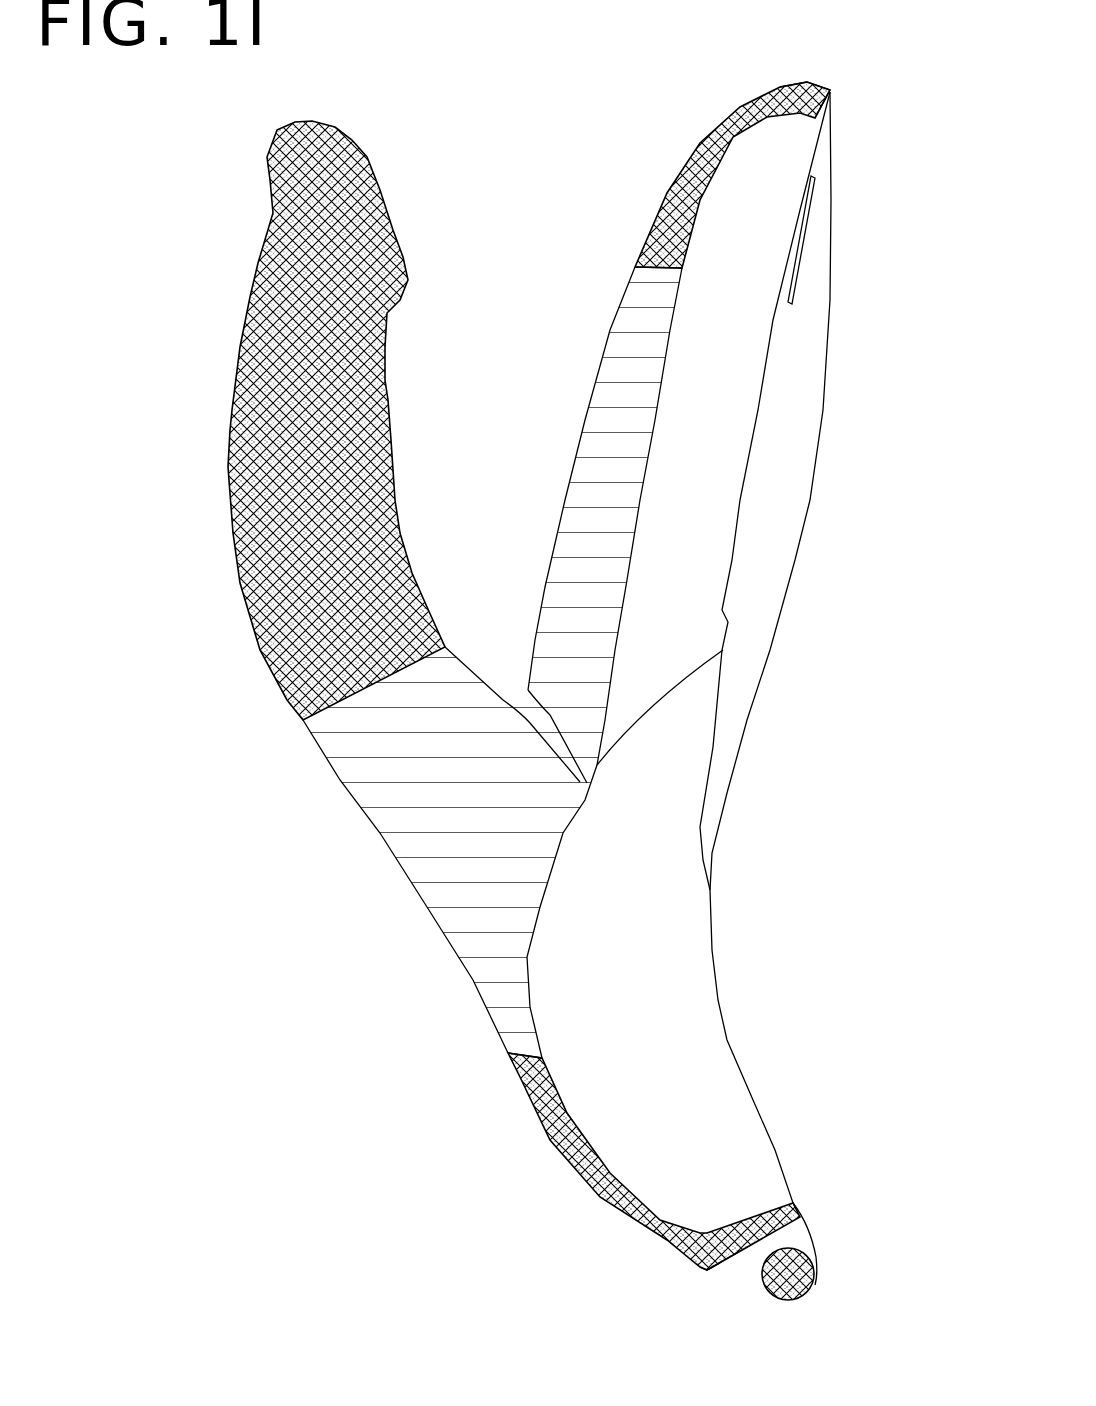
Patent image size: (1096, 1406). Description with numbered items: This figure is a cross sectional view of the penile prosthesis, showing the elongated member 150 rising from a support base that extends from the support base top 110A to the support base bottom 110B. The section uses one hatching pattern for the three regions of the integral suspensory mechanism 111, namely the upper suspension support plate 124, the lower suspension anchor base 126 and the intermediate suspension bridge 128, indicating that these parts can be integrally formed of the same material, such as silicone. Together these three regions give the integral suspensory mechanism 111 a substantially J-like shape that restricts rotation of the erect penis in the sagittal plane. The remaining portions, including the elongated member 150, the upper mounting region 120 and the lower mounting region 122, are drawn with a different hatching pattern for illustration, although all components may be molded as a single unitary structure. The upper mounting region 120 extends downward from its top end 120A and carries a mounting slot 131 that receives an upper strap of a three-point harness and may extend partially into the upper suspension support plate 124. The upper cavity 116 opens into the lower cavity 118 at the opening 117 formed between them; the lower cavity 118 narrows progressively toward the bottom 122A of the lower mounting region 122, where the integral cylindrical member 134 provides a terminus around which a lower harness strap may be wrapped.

The support base top 110A is at (795, 78).
The support base bottom 110B is at (713, 1273).
The integral suspensory mechanism 111 is at (560, 667).
The upper cavity 116 is at (713, 408).
The opening of upper cavity 117 is at (670, 693).
The lower cavity 118 is at (665, 1018).
The upper mounting region 120 is at (688, 186).
The top end of upper mounting region 120A is at (818, 78).
The lower mounting region 122 is at (587, 1167).
The bottom of lower mounting region 122A is at (707, 1270).
The upper suspension support plate 124 is at (583, 493).
The lower suspension anchor base 126 is at (407, 747).
The intermediate suspension bridge 128 is at (540, 723).
The mounting slot 131 is at (800, 248).
The integral cylindrical member 134 is at (812, 1287).
The elongated member 150 is at (272, 298).